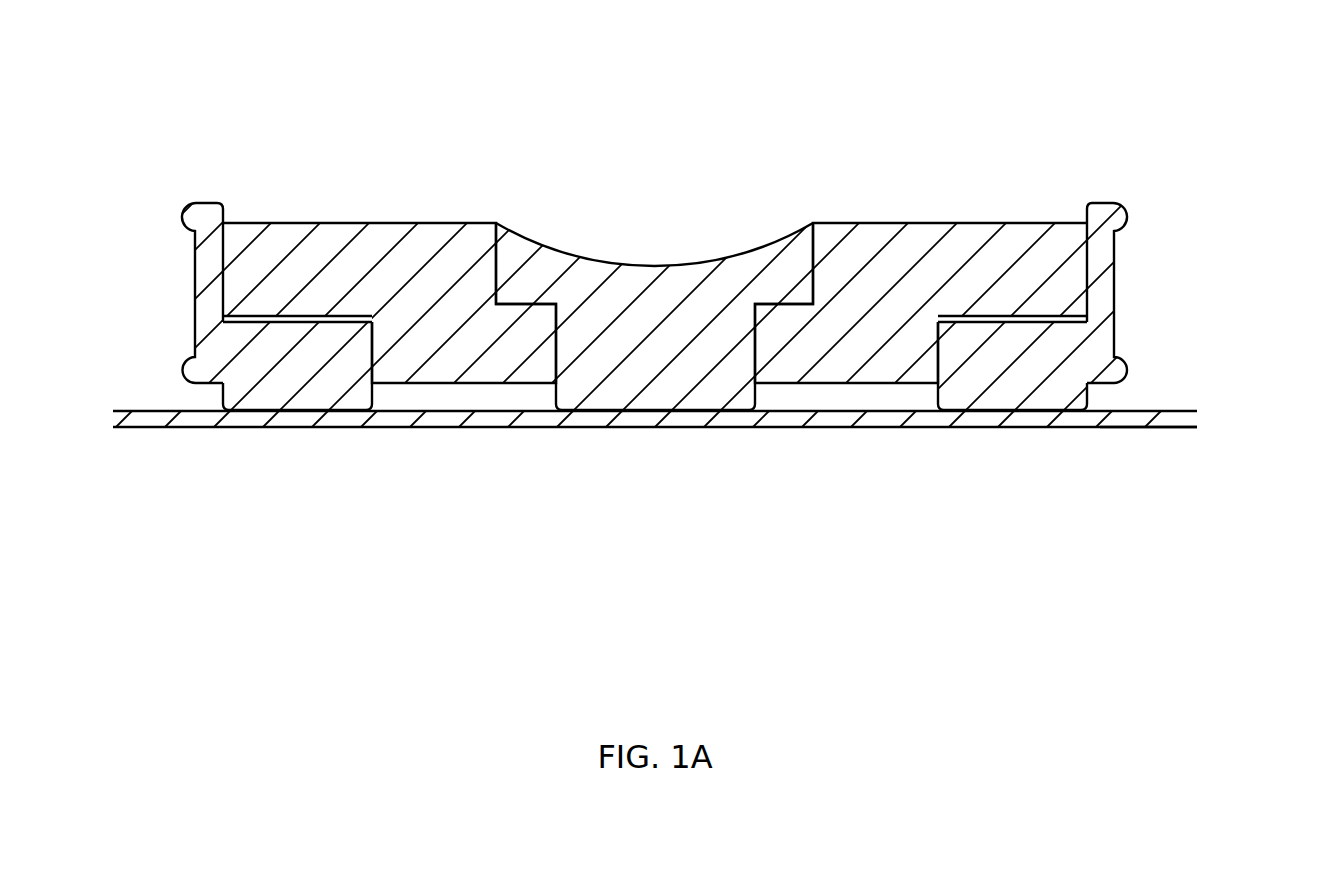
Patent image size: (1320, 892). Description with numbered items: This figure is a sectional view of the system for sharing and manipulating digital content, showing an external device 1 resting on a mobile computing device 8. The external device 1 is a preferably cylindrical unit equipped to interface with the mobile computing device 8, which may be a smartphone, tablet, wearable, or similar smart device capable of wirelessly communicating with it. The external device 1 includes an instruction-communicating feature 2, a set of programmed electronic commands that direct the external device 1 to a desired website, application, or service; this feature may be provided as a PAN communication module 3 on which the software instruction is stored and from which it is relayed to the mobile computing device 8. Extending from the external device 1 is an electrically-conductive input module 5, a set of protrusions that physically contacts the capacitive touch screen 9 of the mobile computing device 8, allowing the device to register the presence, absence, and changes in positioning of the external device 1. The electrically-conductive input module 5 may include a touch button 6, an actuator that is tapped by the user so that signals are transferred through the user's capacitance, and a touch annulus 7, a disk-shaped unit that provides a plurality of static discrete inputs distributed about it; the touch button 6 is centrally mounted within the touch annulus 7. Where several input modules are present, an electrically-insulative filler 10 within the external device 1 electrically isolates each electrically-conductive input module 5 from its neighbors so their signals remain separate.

The external device 1 is at (171, 182).
The instruction-communicating feature 2 is at (231, 343).
The PAN communication module 3 is at (294, 322).
The electrically-conductive input module 5 is at (598, 251).
The touch button 6 is at (627, 287).
The touch annulus 7 is at (308, 395).
The mobile computing device 8 is at (1161, 434).
The capacitive touch screen 9 is at (920, 418).
The electrically-insulative filler 10 is at (434, 240).